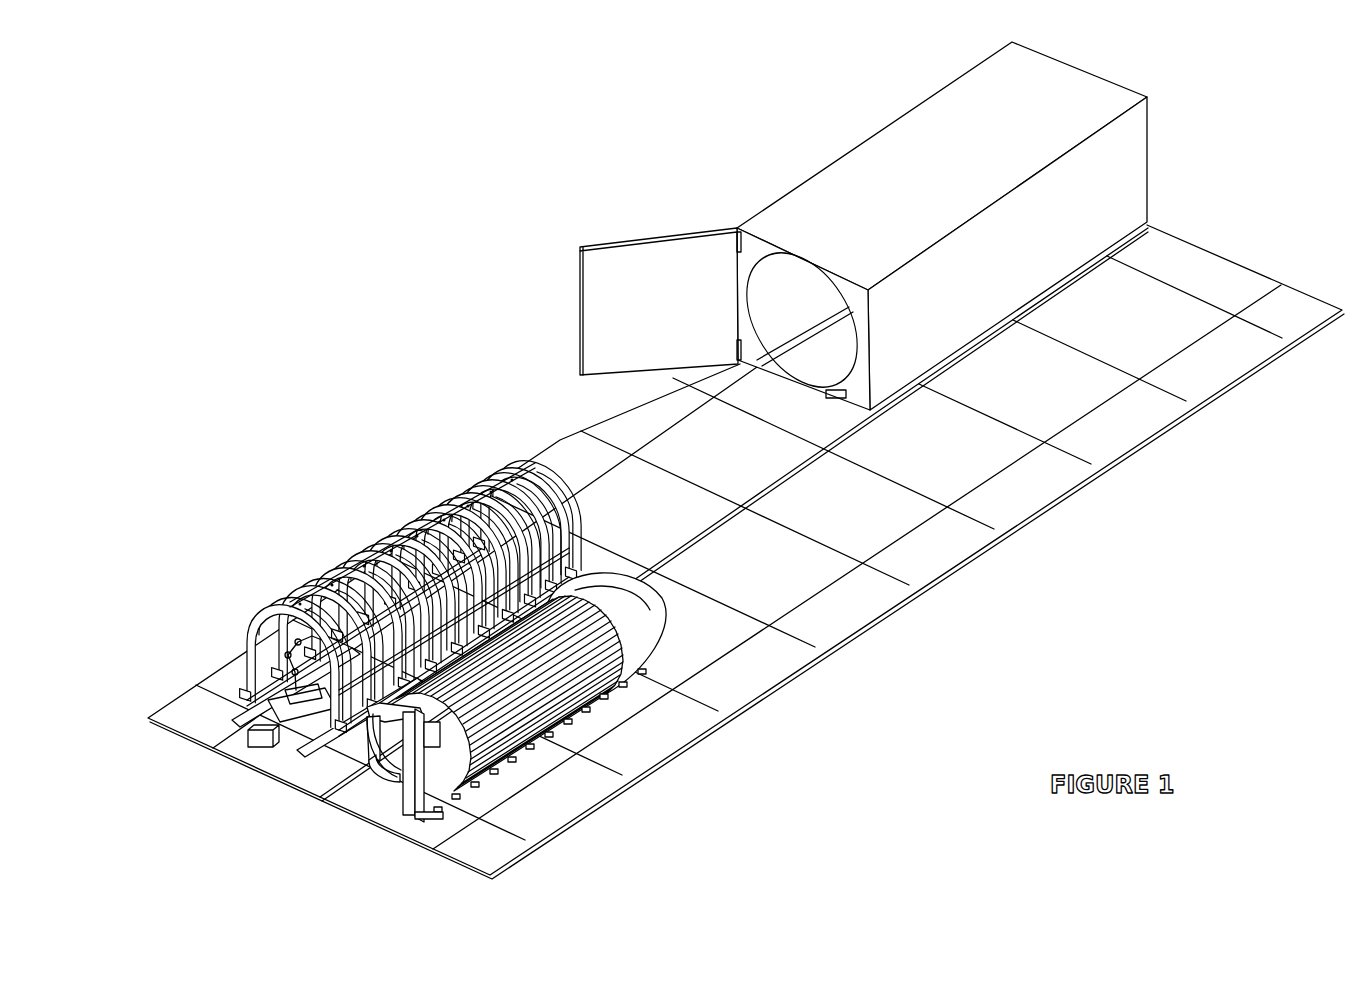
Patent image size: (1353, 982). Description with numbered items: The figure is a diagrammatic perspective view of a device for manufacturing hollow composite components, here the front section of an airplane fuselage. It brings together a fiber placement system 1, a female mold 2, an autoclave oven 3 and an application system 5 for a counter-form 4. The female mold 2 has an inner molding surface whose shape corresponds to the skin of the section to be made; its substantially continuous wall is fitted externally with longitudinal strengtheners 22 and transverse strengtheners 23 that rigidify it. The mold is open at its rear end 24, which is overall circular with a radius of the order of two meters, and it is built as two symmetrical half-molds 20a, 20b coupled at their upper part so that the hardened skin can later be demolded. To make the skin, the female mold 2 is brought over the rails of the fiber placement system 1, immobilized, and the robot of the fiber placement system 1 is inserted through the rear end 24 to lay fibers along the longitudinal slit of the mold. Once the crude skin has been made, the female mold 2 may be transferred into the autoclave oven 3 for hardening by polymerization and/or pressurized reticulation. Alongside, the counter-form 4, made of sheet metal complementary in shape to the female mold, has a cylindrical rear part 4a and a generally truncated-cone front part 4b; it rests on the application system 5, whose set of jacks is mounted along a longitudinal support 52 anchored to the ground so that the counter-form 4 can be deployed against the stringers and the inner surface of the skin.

The fiber placement system 1 is at (280, 756).
The female mold 2 is at (427, 625).
The autoclave oven 3 is at (882, 134).
The counter-form 4 is at (560, 692).
The rear part of the counter-form 4a is at (513, 766).
The front part of the counter-form 4b is at (643, 618).
The application system 5 is at (390, 791).
The half-mold 20a is at (484, 477).
The half-mold 20b is at (587, 513).
The longitudinal strengtheners 22 is at (298, 598).
The transverse strengtheners 23 is at (436, 492).
The rear open end 24 is at (243, 644).
The longitudinal support 52 is at (393, 772).